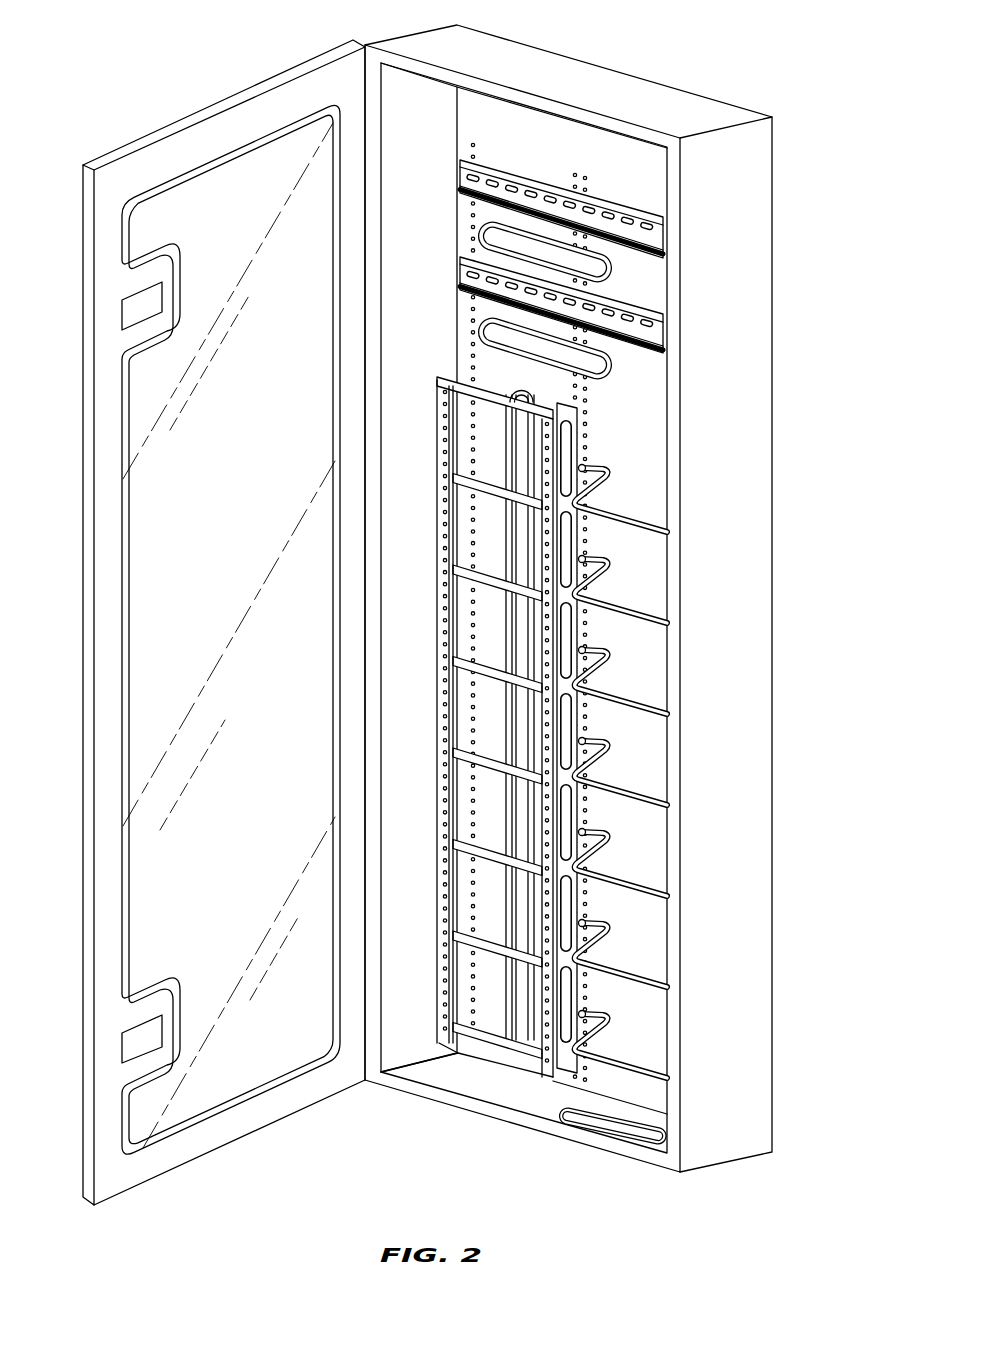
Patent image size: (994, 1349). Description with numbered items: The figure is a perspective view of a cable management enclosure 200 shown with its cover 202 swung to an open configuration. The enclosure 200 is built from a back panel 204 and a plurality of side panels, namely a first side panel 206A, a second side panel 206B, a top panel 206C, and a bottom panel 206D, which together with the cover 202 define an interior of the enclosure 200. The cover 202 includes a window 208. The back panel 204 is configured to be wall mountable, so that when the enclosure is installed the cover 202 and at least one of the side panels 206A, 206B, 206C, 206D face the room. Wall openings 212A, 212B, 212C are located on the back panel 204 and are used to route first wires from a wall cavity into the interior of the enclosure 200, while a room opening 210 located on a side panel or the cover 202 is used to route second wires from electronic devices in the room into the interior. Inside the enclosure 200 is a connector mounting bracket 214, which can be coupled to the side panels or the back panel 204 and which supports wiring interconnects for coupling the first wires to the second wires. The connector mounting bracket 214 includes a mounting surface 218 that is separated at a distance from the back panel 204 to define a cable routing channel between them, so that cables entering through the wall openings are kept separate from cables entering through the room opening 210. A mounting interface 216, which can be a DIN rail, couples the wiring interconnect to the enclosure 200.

The cable management enclosure 200 is at (157, 41).
The cover 202 is at (82, 682).
The back panel 204 is at (483, 117).
The first side panel 206A is at (751, 542).
The second side panel 206B is at (398, 217).
The top panel 206C is at (628, 92).
The bottom panel 206D is at (472, 1102).
The window 208 is at (240, 1083).
The room opening 210 is at (597, 1125).
The wall opening 212A is at (474, 232).
The wall opening 212B is at (474, 330).
The wall opening 212C is at (507, 438).
The connector mounting bracket 214 is at (486, 727).
The mounting interface 216 is at (460, 178).
The mounting surface 218 is at (483, 948).